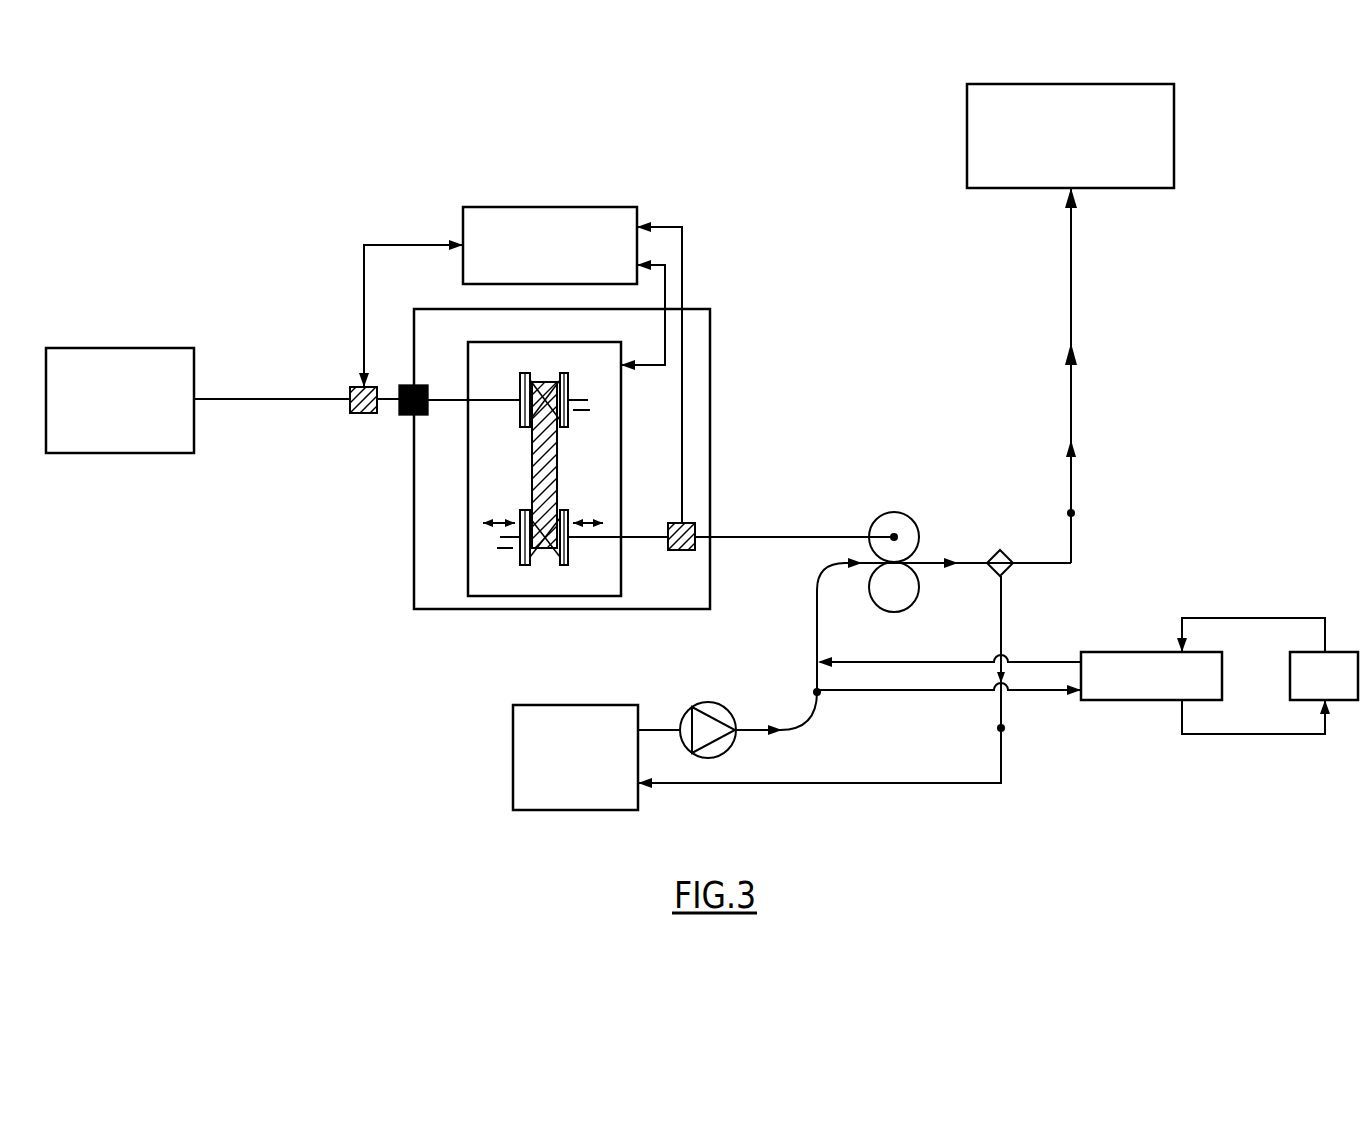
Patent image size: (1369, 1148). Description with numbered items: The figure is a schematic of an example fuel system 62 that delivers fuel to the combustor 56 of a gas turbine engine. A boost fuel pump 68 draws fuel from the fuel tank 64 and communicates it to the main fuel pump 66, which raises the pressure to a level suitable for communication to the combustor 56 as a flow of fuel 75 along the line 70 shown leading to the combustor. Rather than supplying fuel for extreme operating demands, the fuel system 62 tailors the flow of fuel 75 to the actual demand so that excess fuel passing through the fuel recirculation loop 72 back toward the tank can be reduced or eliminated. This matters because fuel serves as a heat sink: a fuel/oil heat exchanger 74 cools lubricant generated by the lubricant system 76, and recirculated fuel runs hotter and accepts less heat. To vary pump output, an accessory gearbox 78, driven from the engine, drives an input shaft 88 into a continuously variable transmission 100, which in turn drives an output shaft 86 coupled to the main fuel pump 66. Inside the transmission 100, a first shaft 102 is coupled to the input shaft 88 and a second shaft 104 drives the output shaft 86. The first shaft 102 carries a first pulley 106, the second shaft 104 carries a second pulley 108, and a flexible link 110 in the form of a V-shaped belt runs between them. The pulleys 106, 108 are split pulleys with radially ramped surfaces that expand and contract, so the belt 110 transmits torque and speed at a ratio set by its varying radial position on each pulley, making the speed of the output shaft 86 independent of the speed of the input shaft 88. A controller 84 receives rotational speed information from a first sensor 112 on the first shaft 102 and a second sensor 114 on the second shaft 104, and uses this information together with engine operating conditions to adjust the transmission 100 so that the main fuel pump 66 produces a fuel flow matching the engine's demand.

The combustor 56 is at (1174, 140).
The fuel system 62 is at (1250, 343).
The fuel tank 64 is at (593, 801).
The main fuel pump 66 is at (921, 518).
The boost fuel pump 68 is at (727, 707).
The fuel line to combustor 70 is at (1072, 513).
The fuel recirculation loop 72 is at (1004, 730).
The fuel/oil heat exchanger 74 is at (1136, 689).
The flow of fuel 75 is at (1082, 443).
The lubricant system 76 is at (1309, 689).
The accessory gearbox 78 is at (128, 355).
The controller 84 is at (566, 274).
The output shaft 86 is at (797, 537).
The input shaft 88 is at (266, 405).
The continuously variable transmission 100 is at (432, 513).
The first shaft 102 is at (446, 403).
The second shaft 104 is at (610, 535).
The first pulley 106 is at (521, 370).
The second pulley 108 is at (521, 557).
The flexible link 110 is at (547, 467).
The first sensor 112 is at (349, 387).
The second sensor 114 is at (689, 523).